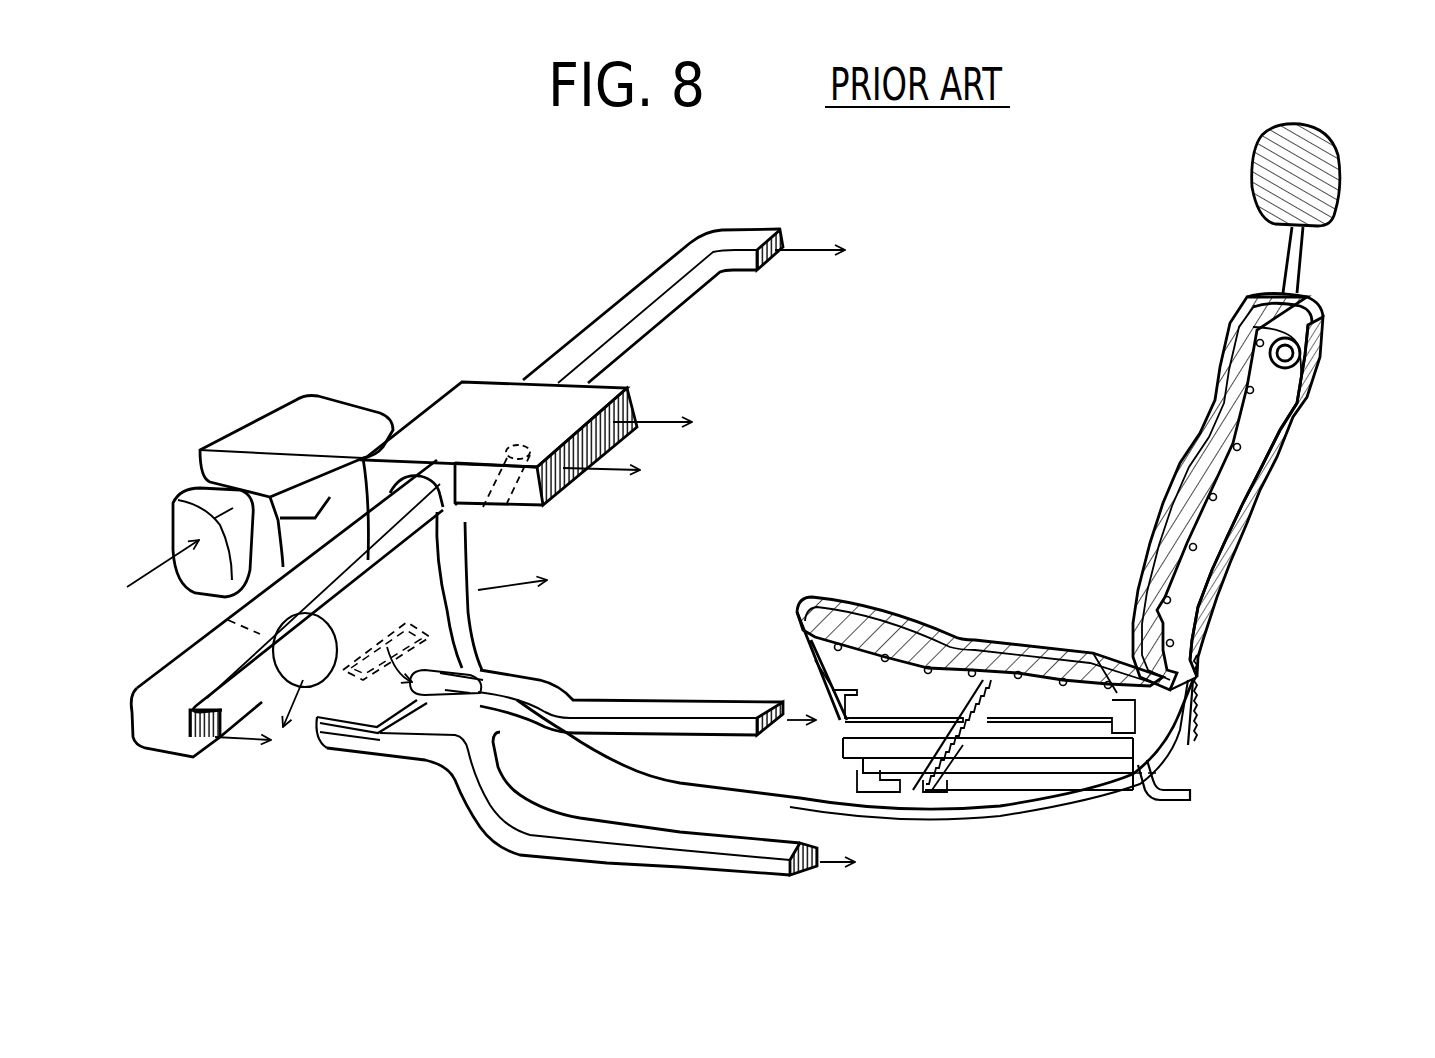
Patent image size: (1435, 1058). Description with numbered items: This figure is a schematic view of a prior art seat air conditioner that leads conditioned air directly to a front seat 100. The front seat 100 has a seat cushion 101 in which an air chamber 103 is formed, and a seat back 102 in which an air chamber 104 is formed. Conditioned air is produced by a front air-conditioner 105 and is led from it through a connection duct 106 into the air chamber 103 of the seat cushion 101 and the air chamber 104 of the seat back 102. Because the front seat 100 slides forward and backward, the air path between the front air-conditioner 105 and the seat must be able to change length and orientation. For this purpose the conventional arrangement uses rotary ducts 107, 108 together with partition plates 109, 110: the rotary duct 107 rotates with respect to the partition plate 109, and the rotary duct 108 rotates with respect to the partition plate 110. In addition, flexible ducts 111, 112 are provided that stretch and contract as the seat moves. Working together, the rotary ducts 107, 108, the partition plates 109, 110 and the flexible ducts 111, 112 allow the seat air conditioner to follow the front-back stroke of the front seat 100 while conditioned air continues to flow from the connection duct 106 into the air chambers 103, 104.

The front seat 100 is at (1336, 308).
The seat cushion 101 is at (870, 627).
The seat back 102 is at (1187, 482).
The air chamber 103 is at (997, 680).
The air chamber 104 is at (1240, 485).
The front air-conditioner 105 is at (405, 391).
The connection duct 106 is at (860, 813).
The rotary duct 107 is at (977, 740).
The rotary duct 108 is at (1200, 683).
The partition plate 109 is at (877, 727).
The partition plate 110 is at (1250, 548).
The flexible duct 111 is at (947, 773).
The flexible duct 112 is at (1195, 746).